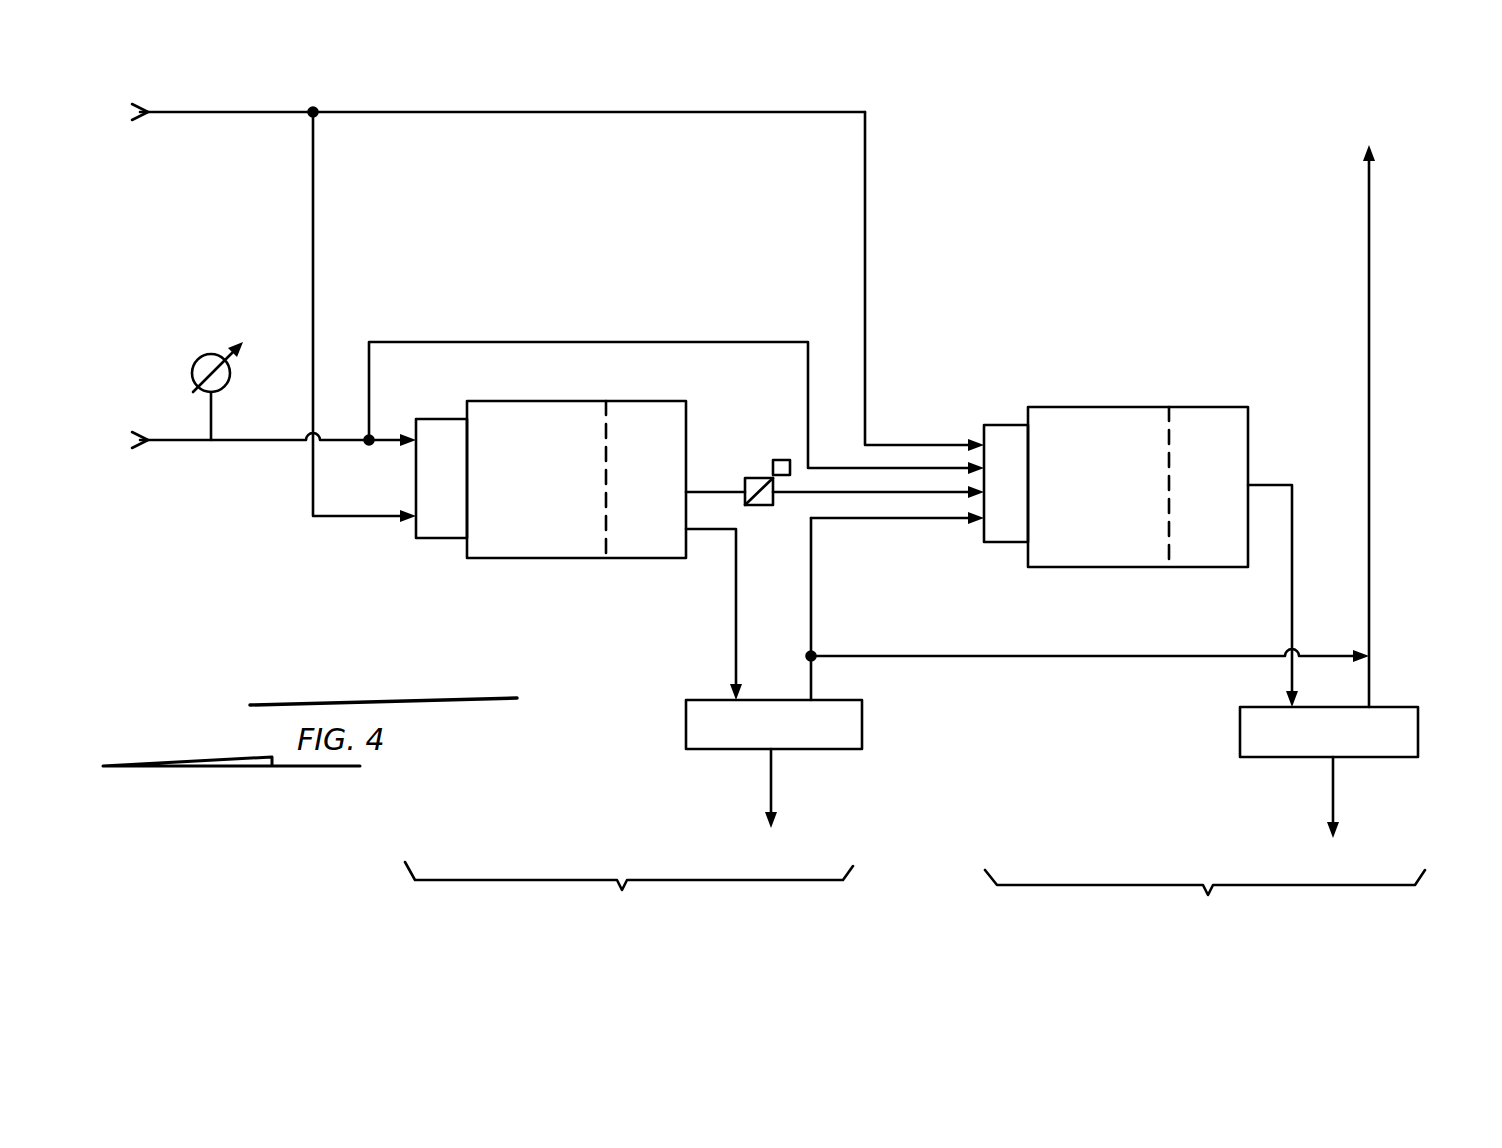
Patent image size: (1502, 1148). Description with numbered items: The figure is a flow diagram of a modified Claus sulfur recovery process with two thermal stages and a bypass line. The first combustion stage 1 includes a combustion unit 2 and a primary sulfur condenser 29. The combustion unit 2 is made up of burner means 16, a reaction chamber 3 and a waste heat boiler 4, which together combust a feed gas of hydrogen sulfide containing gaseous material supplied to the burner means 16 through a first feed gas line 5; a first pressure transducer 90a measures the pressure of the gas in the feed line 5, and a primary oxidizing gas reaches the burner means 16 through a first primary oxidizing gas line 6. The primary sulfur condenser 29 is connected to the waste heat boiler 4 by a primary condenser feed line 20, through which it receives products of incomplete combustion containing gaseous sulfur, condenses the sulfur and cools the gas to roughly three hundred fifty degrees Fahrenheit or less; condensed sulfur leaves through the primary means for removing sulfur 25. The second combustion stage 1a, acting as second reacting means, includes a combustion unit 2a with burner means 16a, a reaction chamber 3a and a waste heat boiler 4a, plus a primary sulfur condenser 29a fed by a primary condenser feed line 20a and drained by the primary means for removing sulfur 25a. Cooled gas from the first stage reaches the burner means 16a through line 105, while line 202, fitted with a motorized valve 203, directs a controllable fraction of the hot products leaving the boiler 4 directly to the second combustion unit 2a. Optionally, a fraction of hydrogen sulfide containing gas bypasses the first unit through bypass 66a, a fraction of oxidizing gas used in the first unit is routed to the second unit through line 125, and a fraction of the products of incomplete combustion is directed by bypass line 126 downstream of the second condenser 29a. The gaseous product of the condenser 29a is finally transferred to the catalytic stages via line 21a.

The combustion stage 1 is at (629, 898).
The second combustion stage 1a is at (1205, 907).
The combustion unit 2 is at (591, 486).
The combustion unit 2a is at (1138, 479).
The reaction chamber 3 is at (540, 560).
The reaction chamber 3a is at (1100, 568).
The waste heat boiler 4 is at (652, 560).
The waste heat boiler 4a is at (1215, 568).
The first feed gas line 5 is at (262, 445).
The first primary oxidizing gas line 6 is at (200, 113).
The burner means 16 is at (432, 540).
The burner means 16a is at (1000, 545).
The primary condenser feed line 20 is at (736, 612).
The primary condenser feed line 20a is at (1278, 485).
The line 21a is at (1369, 648).
The primary means for removing sulfur 25 is at (771, 800).
The primary means for removing sulfur 25a is at (1325, 780).
The primary sulfur condenser 29 is at (686, 732).
The primary sulfur condenser 29a is at (1418, 735).
The optional bypass 66a is at (865, 175).
The first pressure transducer 90a is at (199, 362).
The line 105 is at (811, 604).
The optional line 125 is at (428, 342).
The optional bypass line 126 is at (1005, 658).
The line 202 is at (932, 518).
The motorized valve 203 is at (748, 478).